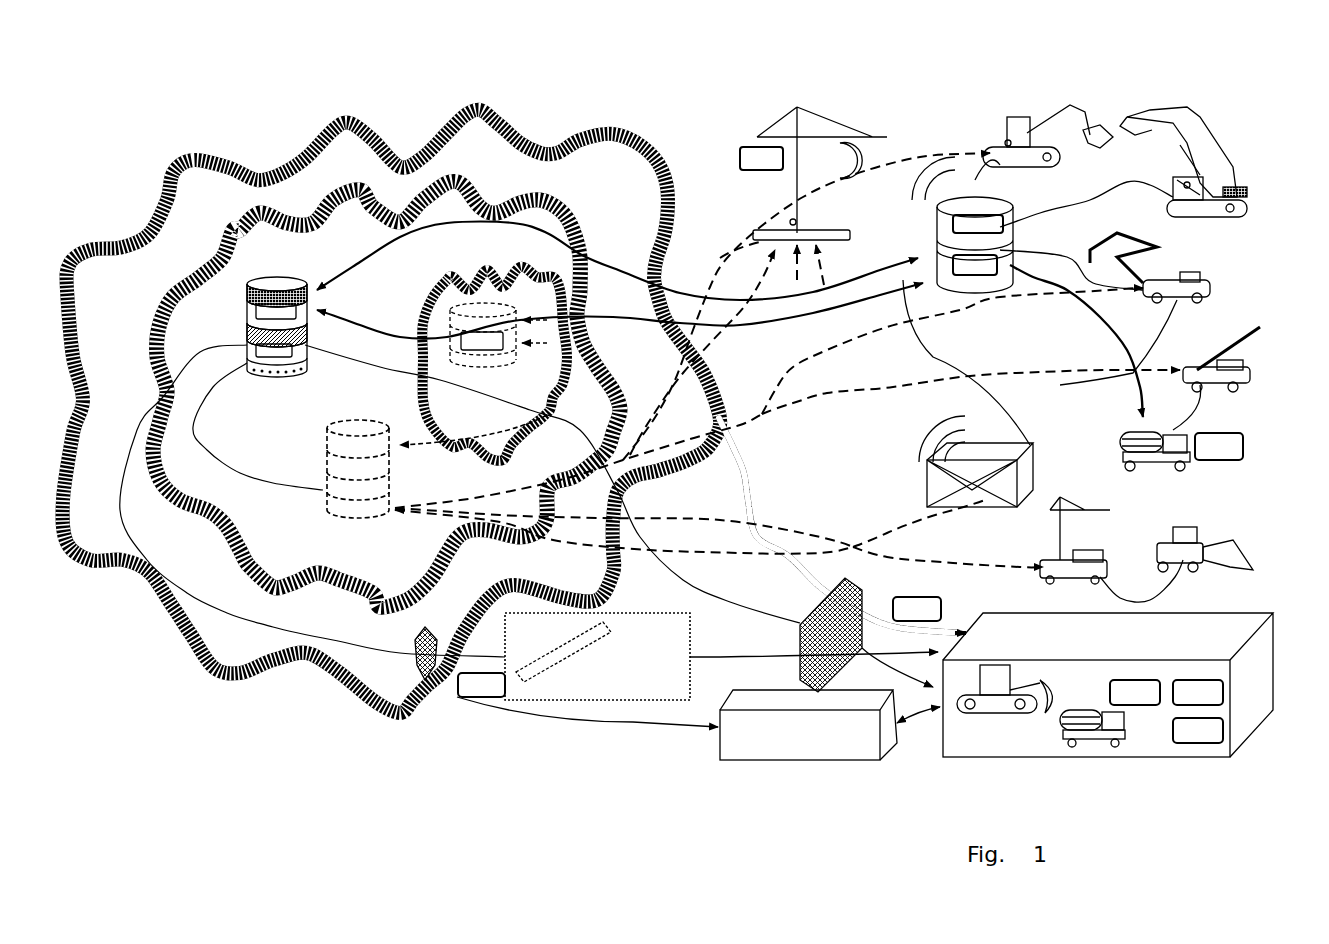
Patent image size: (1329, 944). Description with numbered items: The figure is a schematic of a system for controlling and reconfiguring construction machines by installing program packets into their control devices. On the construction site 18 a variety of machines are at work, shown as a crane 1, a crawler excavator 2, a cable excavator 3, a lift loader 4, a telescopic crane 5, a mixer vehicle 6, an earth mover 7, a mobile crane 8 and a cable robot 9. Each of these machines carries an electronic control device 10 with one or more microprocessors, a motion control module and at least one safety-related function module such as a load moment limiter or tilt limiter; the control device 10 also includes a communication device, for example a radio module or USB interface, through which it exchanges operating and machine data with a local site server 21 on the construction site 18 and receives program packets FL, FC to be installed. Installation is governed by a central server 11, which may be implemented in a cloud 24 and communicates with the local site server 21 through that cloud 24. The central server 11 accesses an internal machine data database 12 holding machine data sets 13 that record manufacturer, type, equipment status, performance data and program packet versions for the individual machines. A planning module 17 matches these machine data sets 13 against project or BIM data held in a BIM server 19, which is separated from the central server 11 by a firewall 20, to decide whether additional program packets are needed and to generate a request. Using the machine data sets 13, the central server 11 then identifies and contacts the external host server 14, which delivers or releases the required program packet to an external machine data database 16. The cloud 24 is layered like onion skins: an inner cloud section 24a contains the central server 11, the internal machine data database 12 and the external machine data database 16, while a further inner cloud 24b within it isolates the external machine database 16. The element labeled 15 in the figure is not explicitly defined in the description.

The crane 1 is at (835, 110).
The crawler excavator 2 is at (1045, 102).
The cable excavator 3 is at (1240, 142).
The lift loader 4 is at (1225, 280).
The telescopic crane 5 is at (1262, 370).
The mixer vehicle 6 is at (1248, 465).
The earth mover 7 is at (1262, 555).
The mobile crane 8 is at (1108, 527).
The cable robot 9 is at (918, 490).
The electronic control device 10 is at (790, 221).
The central server 11 is at (272, 277).
The internal machine data database 12 is at (412, 465).
The machine data sets 13 is at (330, 446).
The external host server 14 is at (985, 765).
The communication path 15 is at (766, 491).
The external machine data database 16 is at (512, 364).
The planning module 17 is at (250, 328).
The construction site 18 is at (918, 100).
The BIM server 19 is at (612, 702).
The firewall 20 is at (420, 690).
The local site server 21 is at (1015, 300).
The cloud 24 is at (180, 172).
The inner cloud section 24a is at (150, 287).
The further inner cloud 24b is at (472, 280).